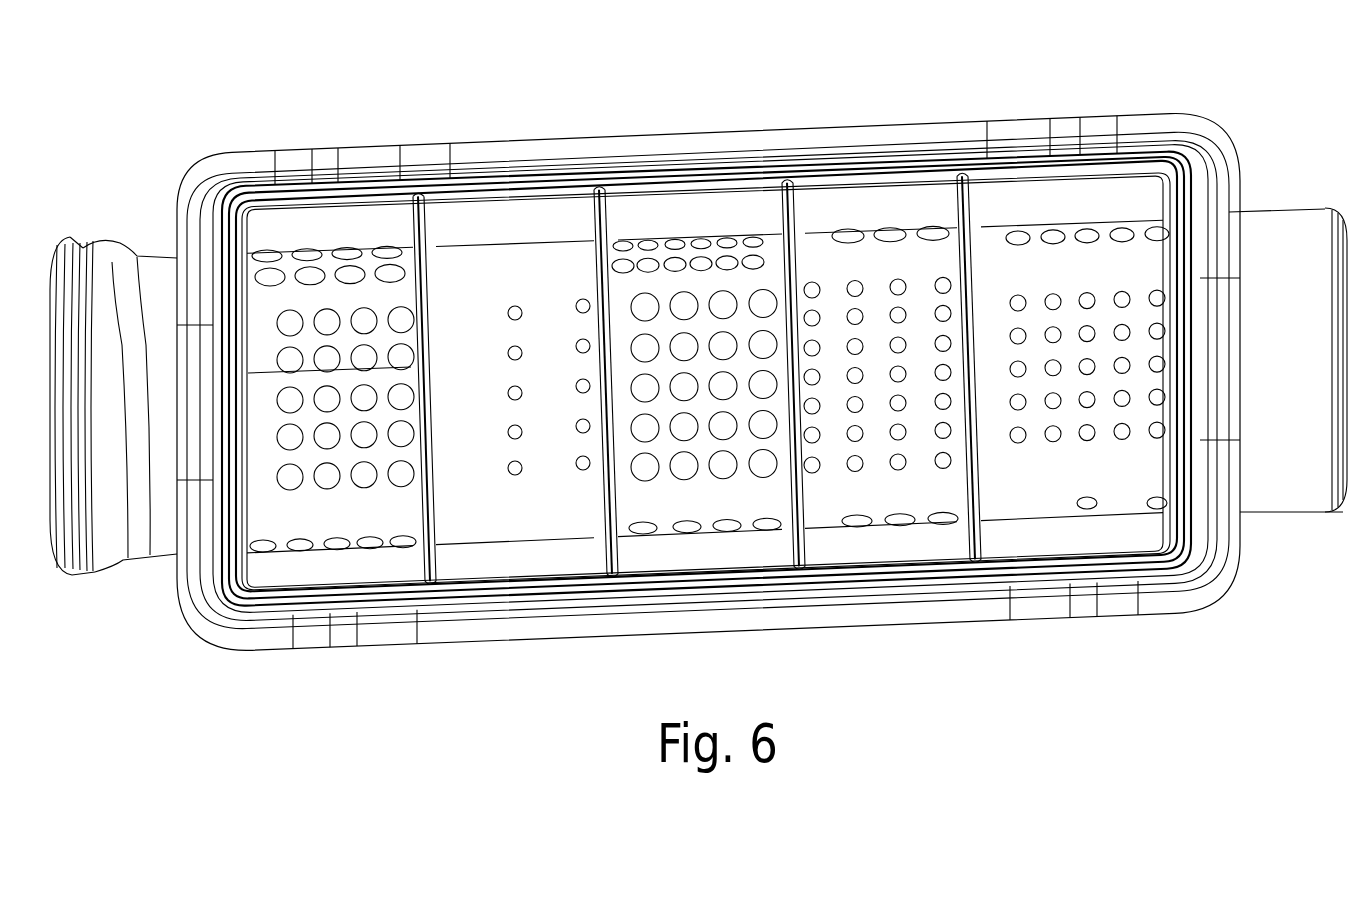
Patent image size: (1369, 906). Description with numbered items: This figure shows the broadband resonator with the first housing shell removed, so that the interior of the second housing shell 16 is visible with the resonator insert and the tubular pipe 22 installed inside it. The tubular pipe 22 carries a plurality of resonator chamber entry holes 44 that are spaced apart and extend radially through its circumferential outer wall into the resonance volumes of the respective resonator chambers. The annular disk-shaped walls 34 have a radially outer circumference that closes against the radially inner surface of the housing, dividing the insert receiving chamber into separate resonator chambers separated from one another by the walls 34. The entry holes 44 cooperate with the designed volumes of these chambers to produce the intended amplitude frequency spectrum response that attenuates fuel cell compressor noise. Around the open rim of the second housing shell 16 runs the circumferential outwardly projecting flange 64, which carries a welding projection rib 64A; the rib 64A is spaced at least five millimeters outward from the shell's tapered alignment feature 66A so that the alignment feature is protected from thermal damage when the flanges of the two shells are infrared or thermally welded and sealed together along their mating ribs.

The second housing shell 16 is at (698, 386).
The tubular pipe 22 is at (1027, 284).
The annular disk-shaped walls 34 is at (610, 554).
The resonator chamber entry holes 44 is at (367, 475).
The circumferential outwardly projecting flange 64 is at (253, 650).
The welding projection rib 64A is at (227, 587).
The tapered alignment feature 66A is at (218, 231).